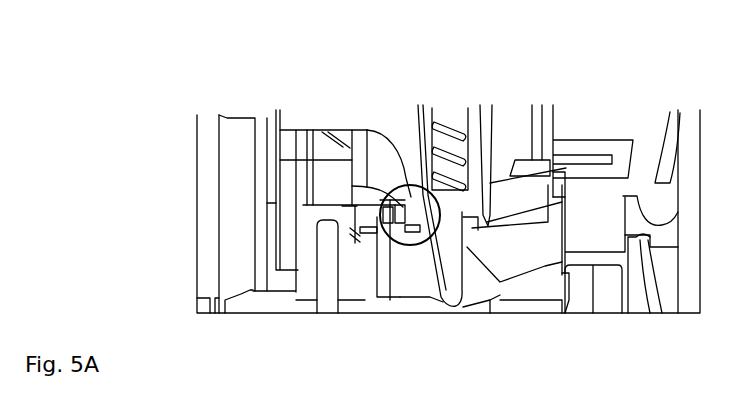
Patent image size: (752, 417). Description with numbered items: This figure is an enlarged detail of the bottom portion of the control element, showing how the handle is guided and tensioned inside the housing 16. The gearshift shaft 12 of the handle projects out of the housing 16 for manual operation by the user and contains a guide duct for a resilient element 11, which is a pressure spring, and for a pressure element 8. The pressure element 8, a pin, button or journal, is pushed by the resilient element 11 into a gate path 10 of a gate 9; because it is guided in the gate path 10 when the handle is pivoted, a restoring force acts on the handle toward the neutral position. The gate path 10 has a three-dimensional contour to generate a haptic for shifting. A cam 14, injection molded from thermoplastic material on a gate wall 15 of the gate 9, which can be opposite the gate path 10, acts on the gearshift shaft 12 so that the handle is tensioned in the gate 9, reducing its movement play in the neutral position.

The pressure element 8 is at (450, 280).
The gate 9 is at (542, 280).
The gate path 10 is at (499, 275).
The resilient element 11 is at (445, 119).
The gearshift shaft 12 is at (488, 119).
The cam 14 is at (413, 236).
The gate wall 15 is at (417, 253).
The housing 16 is at (209, 123).